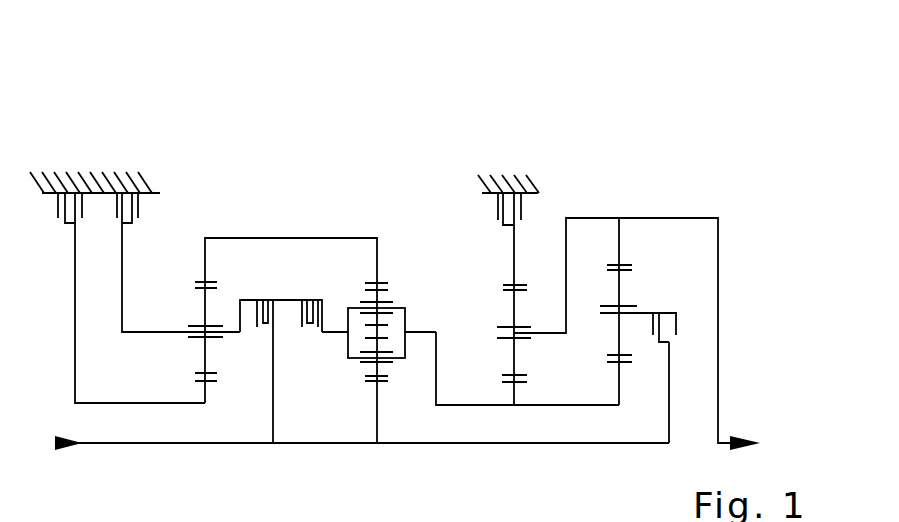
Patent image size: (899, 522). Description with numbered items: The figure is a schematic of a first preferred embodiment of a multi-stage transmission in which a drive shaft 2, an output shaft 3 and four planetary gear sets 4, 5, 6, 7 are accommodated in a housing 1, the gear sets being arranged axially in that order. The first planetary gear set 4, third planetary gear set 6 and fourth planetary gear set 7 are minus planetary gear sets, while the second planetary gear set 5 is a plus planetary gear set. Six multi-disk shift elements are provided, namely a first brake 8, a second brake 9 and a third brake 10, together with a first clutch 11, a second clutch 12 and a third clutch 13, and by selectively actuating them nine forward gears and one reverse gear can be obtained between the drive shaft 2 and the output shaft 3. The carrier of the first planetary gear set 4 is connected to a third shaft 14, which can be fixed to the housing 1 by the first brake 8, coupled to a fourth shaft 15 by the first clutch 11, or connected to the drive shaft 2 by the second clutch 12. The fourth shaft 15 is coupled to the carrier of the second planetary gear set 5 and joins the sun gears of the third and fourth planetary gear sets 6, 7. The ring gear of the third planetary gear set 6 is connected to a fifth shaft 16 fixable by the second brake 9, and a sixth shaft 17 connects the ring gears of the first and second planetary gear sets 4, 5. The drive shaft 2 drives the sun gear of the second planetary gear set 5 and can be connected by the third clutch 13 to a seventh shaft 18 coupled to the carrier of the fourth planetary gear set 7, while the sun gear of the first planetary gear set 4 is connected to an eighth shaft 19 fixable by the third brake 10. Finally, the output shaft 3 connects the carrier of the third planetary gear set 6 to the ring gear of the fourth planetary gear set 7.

The housing 1 is at (133, 176).
The drive shaft 2 is at (173, 443).
The output shaft 3 is at (718, 298).
The first planetary gear set 4 is at (207, 160).
The second planetary gear set 5 is at (377, 160).
The third planetary gear set 6 is at (515, 164).
The fourth planetary gear set 7 is at (620, 164).
The first brake 8 is at (117, 193).
The second brake 9 is at (527, 193).
The third brake 10 is at (72, 193).
The first clutch 11 is at (303, 330).
The second clutch 12 is at (265, 330).
The third clutch 13 is at (672, 342).
The third shaft 14 is at (121, 300).
The fourth shaft 15 is at (527, 406).
The fifth shaft 16 is at (515, 262).
The sixth shaft 17 is at (310, 238).
The seventh shaft 18 is at (642, 315).
The eighth shaft 19 is at (74, 340).